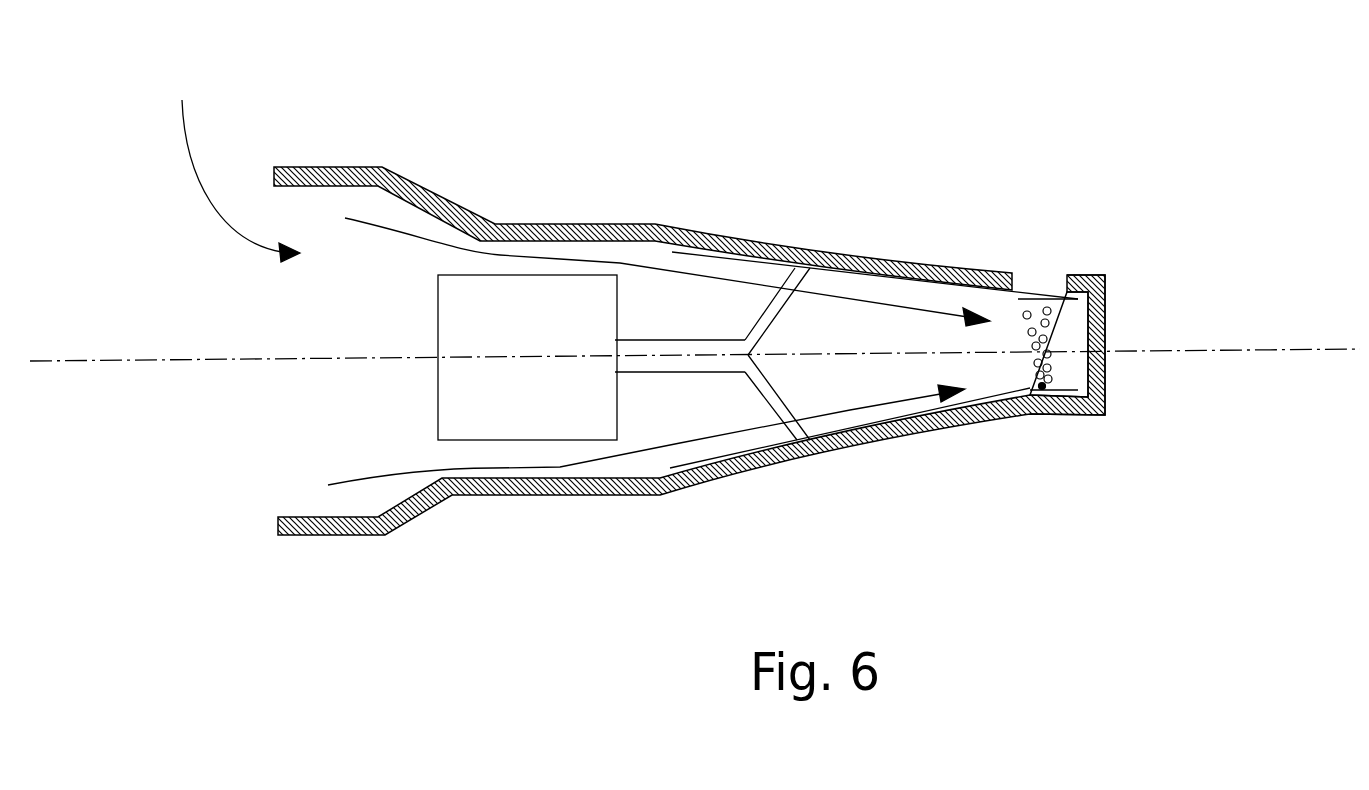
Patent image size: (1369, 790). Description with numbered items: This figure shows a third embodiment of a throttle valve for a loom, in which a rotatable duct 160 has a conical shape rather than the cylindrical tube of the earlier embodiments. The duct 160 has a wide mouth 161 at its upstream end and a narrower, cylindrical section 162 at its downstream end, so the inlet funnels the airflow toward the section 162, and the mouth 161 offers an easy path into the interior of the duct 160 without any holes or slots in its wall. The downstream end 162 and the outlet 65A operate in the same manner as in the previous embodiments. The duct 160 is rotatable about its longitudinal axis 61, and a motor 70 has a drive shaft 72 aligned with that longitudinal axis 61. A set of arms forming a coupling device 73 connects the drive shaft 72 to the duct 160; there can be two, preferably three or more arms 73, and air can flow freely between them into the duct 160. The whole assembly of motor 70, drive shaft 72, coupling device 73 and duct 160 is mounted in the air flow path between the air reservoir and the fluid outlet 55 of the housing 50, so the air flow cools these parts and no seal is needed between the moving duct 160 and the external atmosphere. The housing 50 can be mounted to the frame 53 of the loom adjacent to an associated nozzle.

The housing 50 is at (585, 228).
The frame 53 is at (232, 159).
The fluid outlet 55 is at (1040, 288).
The longitudinal axis 61 is at (245, 358).
The outlet 65A is at (1052, 363).
The motor 70 is at (515, 403).
The drive shaft 72 is at (678, 362).
The coupling device 73 is at (780, 304).
The duct 160 is at (890, 425).
The mouth 161 is at (655, 302).
The cylindrical section 162 is at (1032, 392).